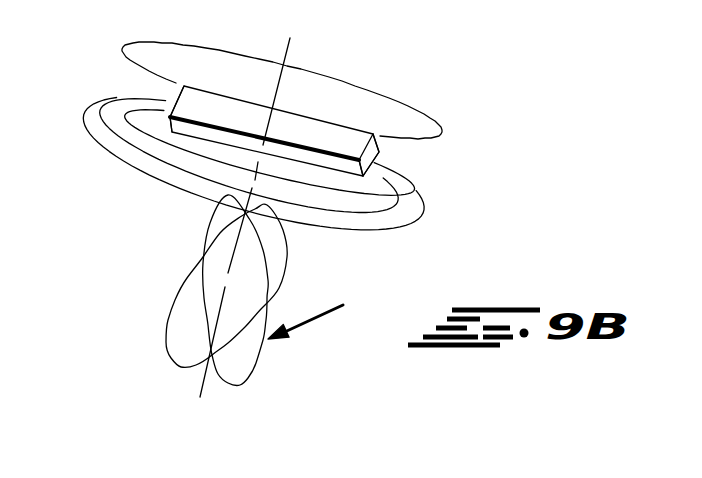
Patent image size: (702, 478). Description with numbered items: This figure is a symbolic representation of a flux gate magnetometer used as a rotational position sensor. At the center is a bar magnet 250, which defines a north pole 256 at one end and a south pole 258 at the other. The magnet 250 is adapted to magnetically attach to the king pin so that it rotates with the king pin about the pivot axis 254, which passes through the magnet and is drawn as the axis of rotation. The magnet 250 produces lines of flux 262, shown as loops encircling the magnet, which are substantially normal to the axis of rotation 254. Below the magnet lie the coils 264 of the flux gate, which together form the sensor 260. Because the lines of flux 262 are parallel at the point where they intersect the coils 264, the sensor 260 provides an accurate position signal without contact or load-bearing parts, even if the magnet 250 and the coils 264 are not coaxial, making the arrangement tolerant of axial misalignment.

The magnet 250 is at (281, 111).
The pivot axis 254 is at (204, 384).
The north pole 256 is at (195, 88).
The south pole 258 is at (362, 135).
The sensor 260 is at (330, 314).
The lines of flux 262 is at (238, 50).
The coils 264 is at (285, 248).